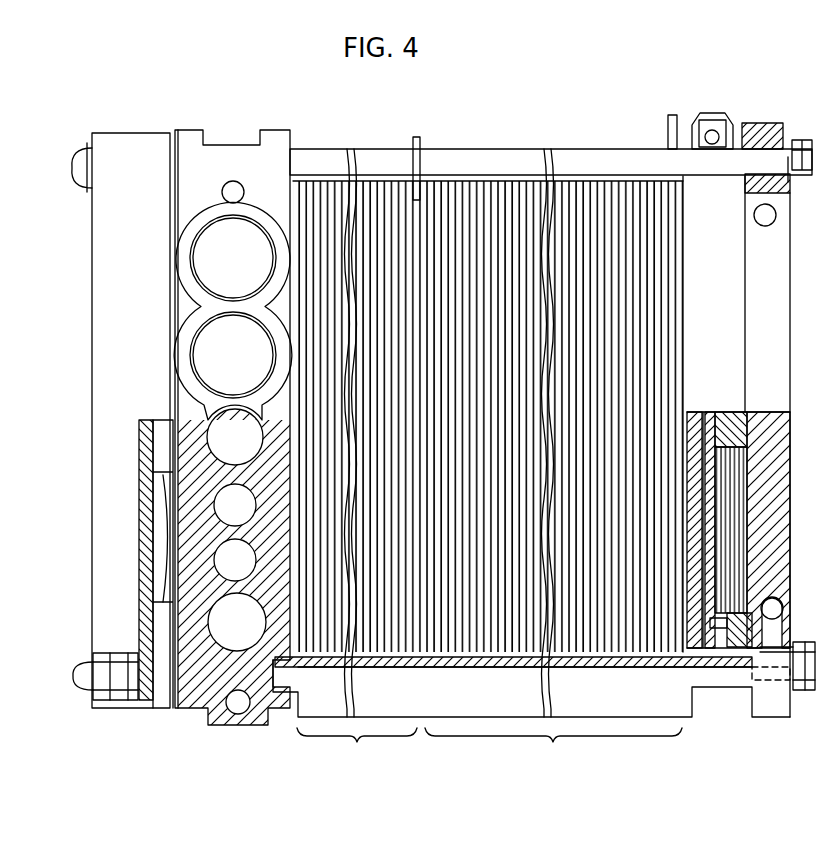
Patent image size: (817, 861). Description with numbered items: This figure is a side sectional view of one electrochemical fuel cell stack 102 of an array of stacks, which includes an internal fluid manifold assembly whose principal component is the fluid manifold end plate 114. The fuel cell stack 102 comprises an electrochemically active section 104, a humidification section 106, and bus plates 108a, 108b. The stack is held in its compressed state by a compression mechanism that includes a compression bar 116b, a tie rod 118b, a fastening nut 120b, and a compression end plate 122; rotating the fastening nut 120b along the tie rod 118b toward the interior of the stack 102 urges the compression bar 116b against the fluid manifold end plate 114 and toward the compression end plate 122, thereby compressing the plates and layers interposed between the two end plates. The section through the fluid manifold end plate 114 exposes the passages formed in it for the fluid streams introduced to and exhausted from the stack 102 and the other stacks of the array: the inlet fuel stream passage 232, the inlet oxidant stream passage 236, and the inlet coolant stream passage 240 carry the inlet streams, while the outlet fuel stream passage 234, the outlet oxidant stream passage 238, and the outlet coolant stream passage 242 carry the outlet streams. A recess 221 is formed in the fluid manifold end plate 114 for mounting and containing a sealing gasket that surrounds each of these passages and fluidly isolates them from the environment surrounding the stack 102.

The fuel cell stack 102 is at (657, 757).
The electrochemically active section 104 is at (553, 749).
The humidification section 106 is at (357, 749).
The bus plate 108a is at (432, 108).
The bus plate 108b is at (672, 115).
The fluid manifold end plate 114 is at (273, 140).
The compression bar 116b is at (140, 146).
The tie rod 118b is at (590, 150).
The fastening nut 120b is at (73, 160).
The compression end plate 122 is at (748, 123).
The recess 221 is at (188, 278).
The inlet fuel stream passage 232 is at (225, 568).
The outlet fuel stream passage 234 is at (225, 515).
The inlet oxidant stream passage 236 is at (225, 640).
The outlet oxidant stream passage 238 is at (217, 443).
The inlet coolant stream passage 240 is at (207, 343).
The outlet coolant stream passage 242 is at (220, 232).